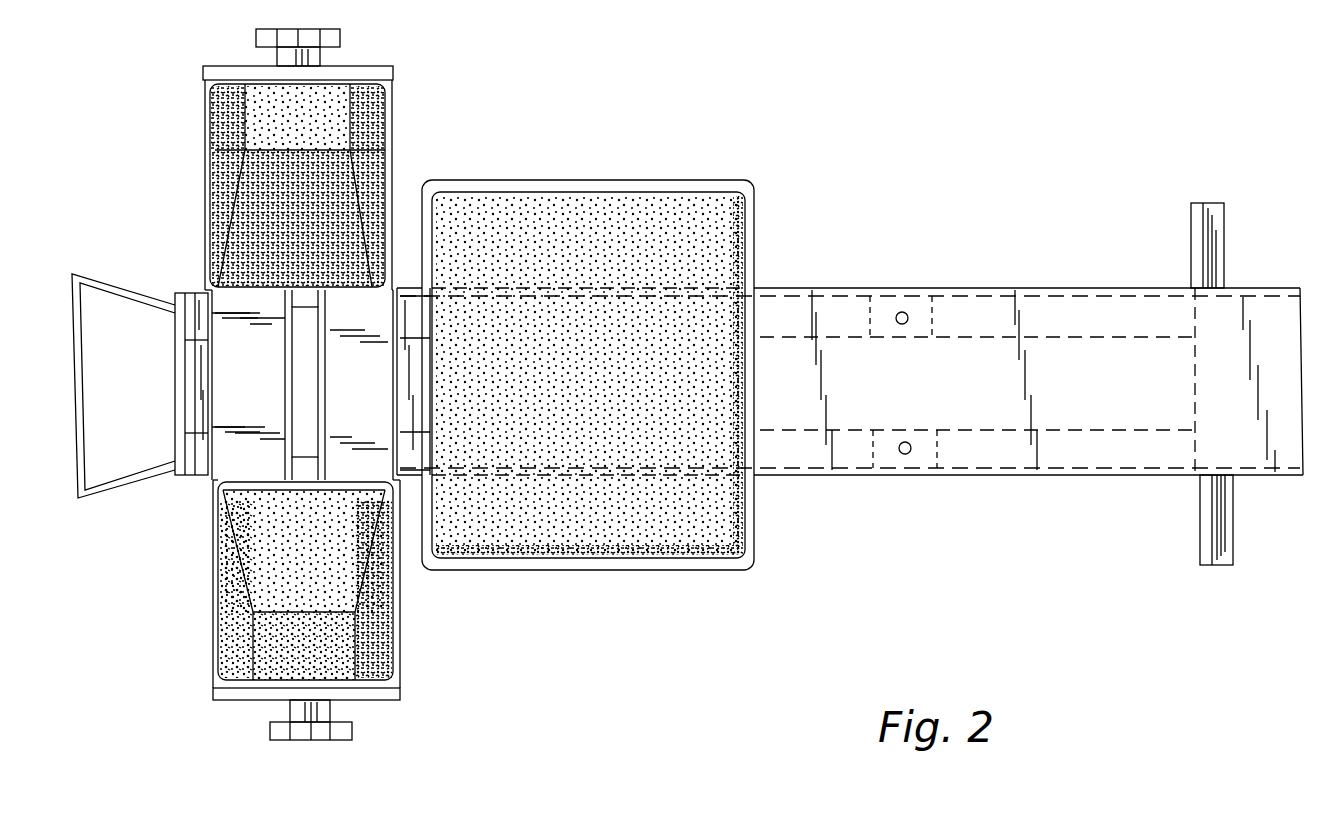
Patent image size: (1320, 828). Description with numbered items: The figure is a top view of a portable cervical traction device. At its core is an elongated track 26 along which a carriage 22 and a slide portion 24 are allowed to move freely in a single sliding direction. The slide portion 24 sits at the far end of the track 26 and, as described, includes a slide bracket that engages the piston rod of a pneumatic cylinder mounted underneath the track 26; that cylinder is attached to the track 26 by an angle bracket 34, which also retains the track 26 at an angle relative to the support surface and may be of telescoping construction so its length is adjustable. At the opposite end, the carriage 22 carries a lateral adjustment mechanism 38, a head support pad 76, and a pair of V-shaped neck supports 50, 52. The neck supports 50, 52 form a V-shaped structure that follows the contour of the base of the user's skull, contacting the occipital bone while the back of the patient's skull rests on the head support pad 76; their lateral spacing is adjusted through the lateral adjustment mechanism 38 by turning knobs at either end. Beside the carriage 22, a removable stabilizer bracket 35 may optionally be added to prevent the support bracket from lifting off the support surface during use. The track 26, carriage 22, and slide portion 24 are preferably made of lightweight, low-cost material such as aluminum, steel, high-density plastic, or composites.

The lateral adjustment mechanism 38 is at (436, 71).
The left neck support 50 is at (392, 128).
The right neck support 52 is at (367, 641).
The carriage 22 is at (212, 478).
The removable stabilizer bracket 35 is at (131, 289).
The head support pad 76 is at (690, 213).
The track 26 is at (1103, 310).
The slide portion 24 is at (1273, 303).
The angle bracket 34 is at (1203, 520).